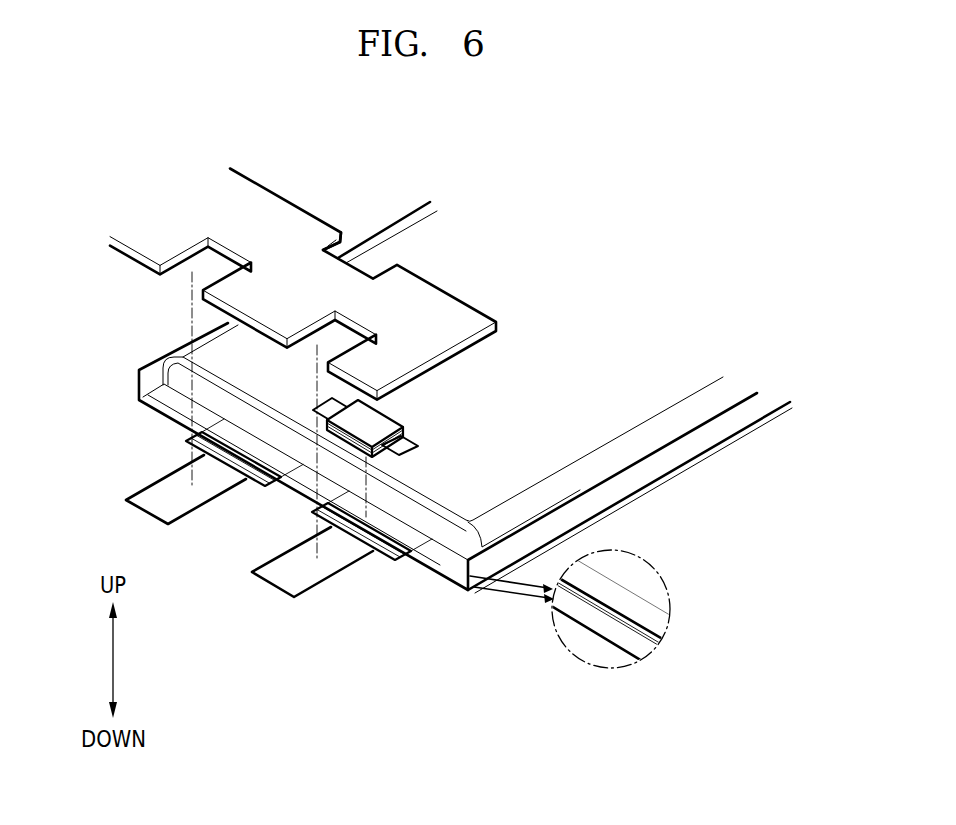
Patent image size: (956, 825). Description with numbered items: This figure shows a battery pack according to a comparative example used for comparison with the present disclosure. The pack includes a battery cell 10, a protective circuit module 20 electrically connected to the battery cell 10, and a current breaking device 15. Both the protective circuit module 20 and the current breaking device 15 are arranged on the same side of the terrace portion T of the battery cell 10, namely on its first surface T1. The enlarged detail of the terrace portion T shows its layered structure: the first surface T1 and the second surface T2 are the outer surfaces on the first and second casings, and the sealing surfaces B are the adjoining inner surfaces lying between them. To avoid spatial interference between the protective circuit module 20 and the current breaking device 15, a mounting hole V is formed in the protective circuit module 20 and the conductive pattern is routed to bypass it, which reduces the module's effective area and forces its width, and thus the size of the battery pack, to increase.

The battery cell 10 is at (650, 400).
The protective circuit module 20 is at (448, 298).
The current breaking device 15 is at (433, 428).
The mounting hole V is at (333, 244).
The terrace portion T is at (307, 486).
The first surface T1 is at (622, 585).
The second surface T2 is at (617, 648).
The sealing surfaces B is at (630, 623).